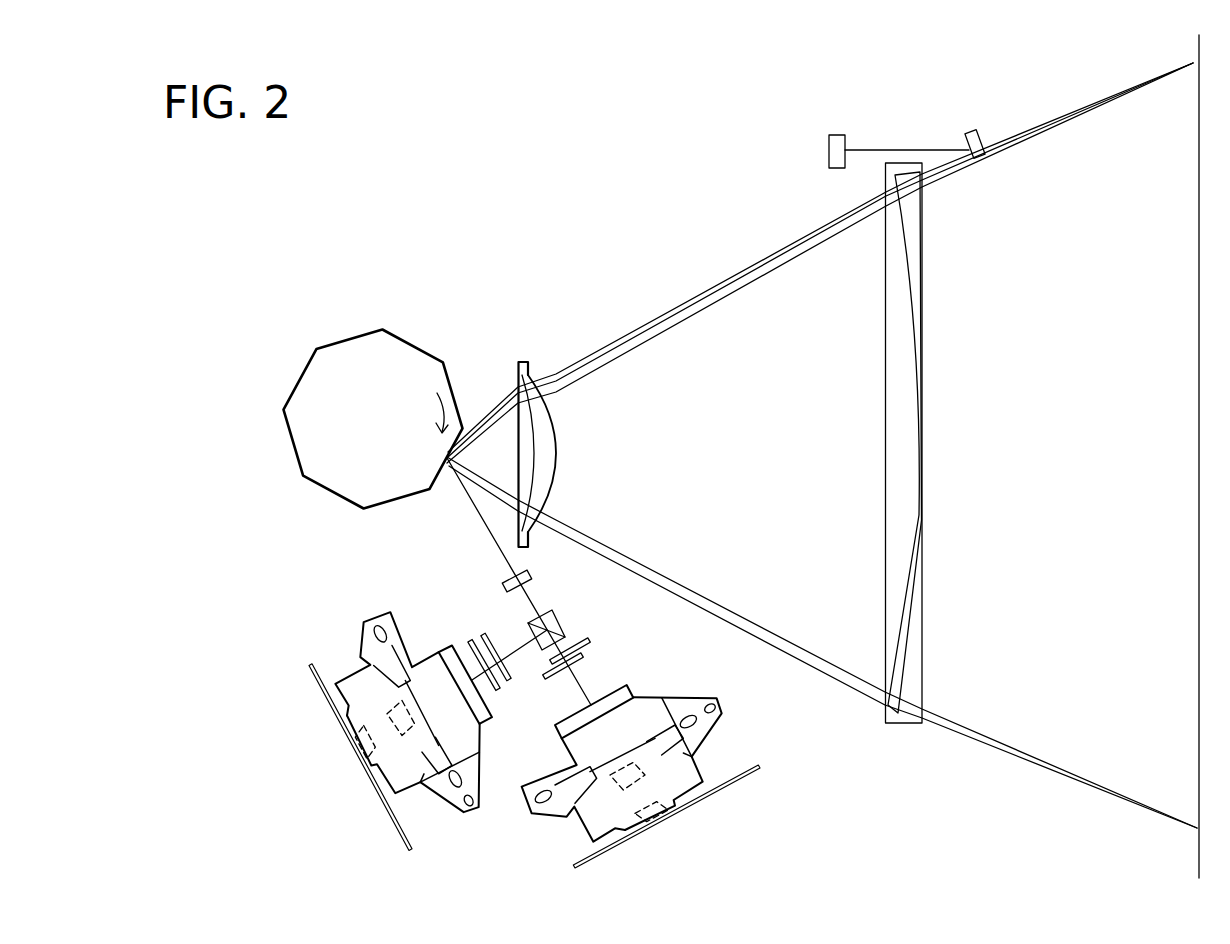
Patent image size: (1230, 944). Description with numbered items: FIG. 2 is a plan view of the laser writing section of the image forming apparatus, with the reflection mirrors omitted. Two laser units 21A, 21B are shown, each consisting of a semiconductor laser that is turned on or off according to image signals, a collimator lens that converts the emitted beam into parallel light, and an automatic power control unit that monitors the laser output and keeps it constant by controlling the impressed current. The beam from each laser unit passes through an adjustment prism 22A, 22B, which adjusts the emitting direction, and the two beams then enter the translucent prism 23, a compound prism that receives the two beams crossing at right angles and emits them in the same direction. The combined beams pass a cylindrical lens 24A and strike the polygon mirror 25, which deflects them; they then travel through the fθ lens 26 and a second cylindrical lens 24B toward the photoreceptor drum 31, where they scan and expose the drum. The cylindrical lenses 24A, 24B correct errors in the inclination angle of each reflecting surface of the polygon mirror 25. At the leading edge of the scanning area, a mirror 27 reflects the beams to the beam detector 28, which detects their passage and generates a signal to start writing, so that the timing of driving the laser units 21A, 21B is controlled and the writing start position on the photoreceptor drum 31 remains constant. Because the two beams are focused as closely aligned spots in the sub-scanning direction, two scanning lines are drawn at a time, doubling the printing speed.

The laser unit 21A is at (736, 784).
The laser unit 21B is at (392, 817).
The adjustment prism 22A is at (598, 650).
The adjustment prism 22B is at (483, 640).
The translucent prism 23 is at (564, 620).
The cylindrical lens 24A is at (503, 581).
The cylindrical lens 24B is at (918, 510).
The polygon mirror 25 is at (395, 336).
The fθ lens 26 is at (556, 446).
The mirror 27 is at (984, 136).
The beam detector 28 is at (828, 154).
The photoreceptor drum 31 is at (1198, 410).